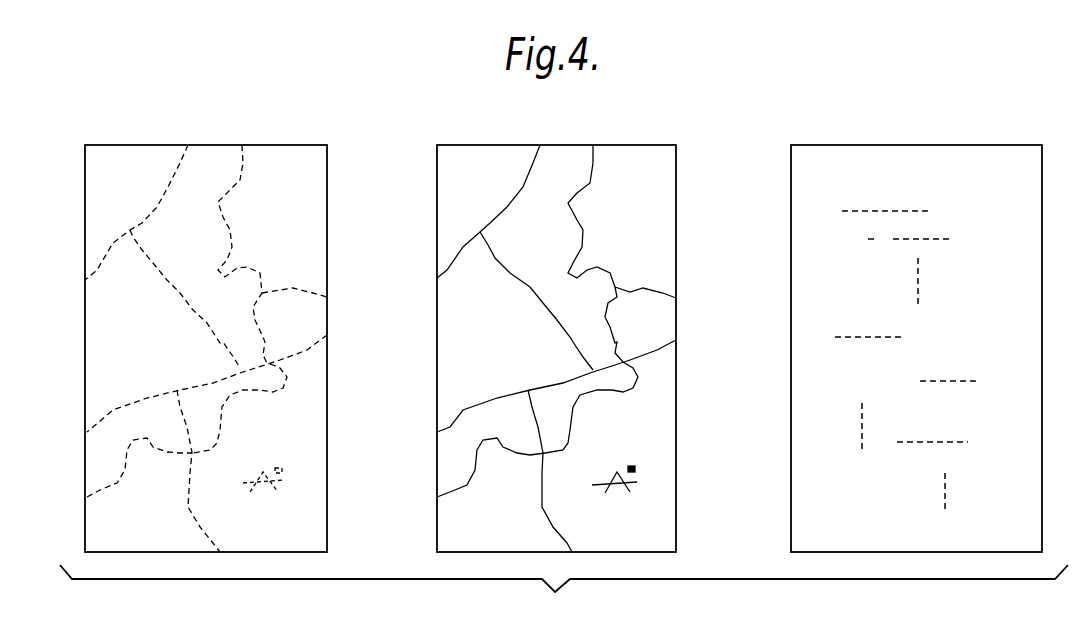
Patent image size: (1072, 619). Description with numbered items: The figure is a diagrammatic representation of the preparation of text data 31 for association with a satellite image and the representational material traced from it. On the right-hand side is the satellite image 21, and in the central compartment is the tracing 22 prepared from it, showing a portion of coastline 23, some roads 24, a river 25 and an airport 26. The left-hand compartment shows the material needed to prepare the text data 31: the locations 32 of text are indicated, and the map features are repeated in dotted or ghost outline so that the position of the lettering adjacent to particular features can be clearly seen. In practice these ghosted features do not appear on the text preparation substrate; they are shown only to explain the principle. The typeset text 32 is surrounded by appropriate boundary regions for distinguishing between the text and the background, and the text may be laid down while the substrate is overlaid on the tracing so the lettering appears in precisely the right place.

The satellite image 21 is at (947, 145).
The tracing 22 is at (634, 145).
The portion of coastline 23 is at (582, 228).
The roads 24 is at (497, 257).
The river 25 is at (612, 393).
The airport 26 is at (603, 493).
The text data 31 is at (278, 145).
The locations of text 32 is at (162, 242).